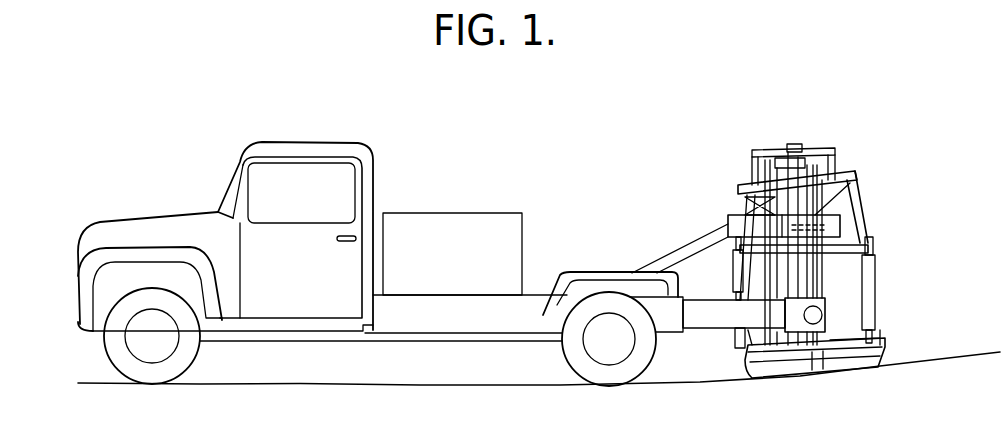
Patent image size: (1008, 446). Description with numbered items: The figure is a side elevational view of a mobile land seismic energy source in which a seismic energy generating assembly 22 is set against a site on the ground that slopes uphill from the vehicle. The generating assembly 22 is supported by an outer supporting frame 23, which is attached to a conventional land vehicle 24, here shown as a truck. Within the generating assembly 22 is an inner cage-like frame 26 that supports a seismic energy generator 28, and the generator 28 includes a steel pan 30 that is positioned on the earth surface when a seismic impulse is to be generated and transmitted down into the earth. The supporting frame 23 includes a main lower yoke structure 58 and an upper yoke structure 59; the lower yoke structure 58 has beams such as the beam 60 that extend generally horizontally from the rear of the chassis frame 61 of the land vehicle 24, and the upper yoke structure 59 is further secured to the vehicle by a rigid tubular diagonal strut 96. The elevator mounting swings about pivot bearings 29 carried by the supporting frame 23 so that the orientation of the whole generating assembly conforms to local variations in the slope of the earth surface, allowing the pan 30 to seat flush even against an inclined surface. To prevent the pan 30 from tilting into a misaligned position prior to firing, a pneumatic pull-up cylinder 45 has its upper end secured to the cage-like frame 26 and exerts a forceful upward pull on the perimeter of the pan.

The seismic energy generating assembly 22 is at (808, 276).
The outer supporting frame 23 is at (753, 349).
The land vehicle 24 is at (521, 153).
The inner cage-like frame 26 is at (868, 198).
The seismic energy generator 28 is at (843, 302).
The pivot bearings 29 is at (807, 333).
The steel pan 30 is at (848, 367).
The pneumatic pull-up cylinder 45 is at (733, 270).
The main lower yoke structure 58 is at (785, 357).
The upper yoke structure 59 is at (742, 208).
The beam 60 is at (708, 308).
The chassis frame 61 is at (663, 328).
The diagonal strut 96 is at (696, 246).